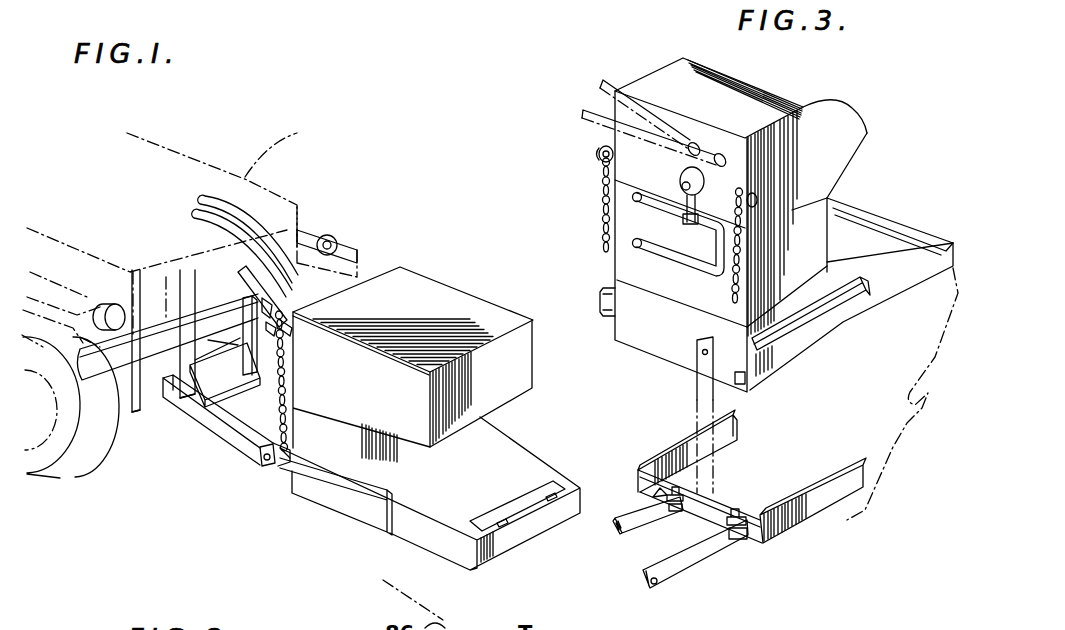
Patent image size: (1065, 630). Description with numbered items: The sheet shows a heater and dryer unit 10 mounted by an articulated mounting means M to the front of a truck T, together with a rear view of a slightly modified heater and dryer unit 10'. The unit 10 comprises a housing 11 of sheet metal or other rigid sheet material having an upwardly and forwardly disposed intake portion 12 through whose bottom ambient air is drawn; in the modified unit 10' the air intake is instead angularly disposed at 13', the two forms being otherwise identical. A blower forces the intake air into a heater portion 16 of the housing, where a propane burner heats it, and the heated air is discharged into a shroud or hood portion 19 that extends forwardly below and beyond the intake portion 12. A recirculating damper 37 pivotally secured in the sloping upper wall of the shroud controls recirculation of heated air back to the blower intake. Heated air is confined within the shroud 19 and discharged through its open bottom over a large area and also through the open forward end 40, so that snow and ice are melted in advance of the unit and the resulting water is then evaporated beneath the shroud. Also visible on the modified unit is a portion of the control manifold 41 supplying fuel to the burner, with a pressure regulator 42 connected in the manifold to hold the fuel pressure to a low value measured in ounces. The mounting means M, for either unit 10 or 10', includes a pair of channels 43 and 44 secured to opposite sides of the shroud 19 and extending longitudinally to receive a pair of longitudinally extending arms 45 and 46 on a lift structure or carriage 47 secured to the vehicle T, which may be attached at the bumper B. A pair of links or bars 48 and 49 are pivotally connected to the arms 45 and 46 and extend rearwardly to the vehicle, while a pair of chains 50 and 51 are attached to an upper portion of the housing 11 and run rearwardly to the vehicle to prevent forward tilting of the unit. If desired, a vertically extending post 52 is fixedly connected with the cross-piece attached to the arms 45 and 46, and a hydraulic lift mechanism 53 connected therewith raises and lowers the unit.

In FIG. 1, the heater and dryer unit 10 is at (444, 329).
In FIG. 3, the modified heater and dryer unit 10' is at (630, 92).
In FIG. 1, the housing 11 is at (497, 297).
In FIG. 3, the housing 11 is at (669, 59).
In FIG. 1, the intake portion 12 is at (520, 358).
In FIG. 3, the intake portion 12 is at (812, 130).
In FIG. 3, the angularly disposed air intake 13' is at (864, 165).
In FIG. 1, the heater portion 16 is at (312, 424).
In FIG. 3, the heater portion 16 is at (812, 232).
In FIG. 1, the shroud or hood portion 19 is at (483, 437).
In FIG. 3, the shroud or hood portion 19 is at (887, 290).
In FIG. 1, the recirculating damper 37 is at (541, 490).
In FIG. 3, the recirculating damper 37 is at (877, 227).
In FIG. 1, the open forward end of shroud 40 is at (480, 568).
In FIG. 3, the control manifold 41 is at (678, 218).
In FIG. 3, the pressure regulator 42 is at (683, 172).
In FIG. 3, the channel 43 is at (600, 302).
In FIG. 1, the channel 44 is at (312, 502).
In FIG. 3, the channel 44 is at (774, 357).
In FIG. 3, the arm 45 is at (730, 442).
In FIG. 3, the arm 46 is at (813, 487).
In FIG. 3, the lift structure or carriage 47 is at (720, 568).
In FIG. 3, the link or bar 48 is at (640, 520).
In FIG. 1, the link or bar 49 is at (225, 432).
In FIG. 3, the link or bar 49 is at (657, 590).
In FIG. 3, the chain 50 is at (600, 193).
In FIG. 1, the chain 51 is at (287, 392).
In FIG. 3, the chain 51 is at (742, 270).
In FIG. 3, the vertically extending post 52 is at (697, 387).
In FIG. 1, the hydraulic lift mechanism 53 is at (280, 270).
In FIG. 1, the bumper B is at (352, 258).
In FIG. 1, the truck T is at (276, 152).
In FIG. 1, the mounting means M is at (194, 430).
In FIG. 3, the mounting means M is at (768, 553).